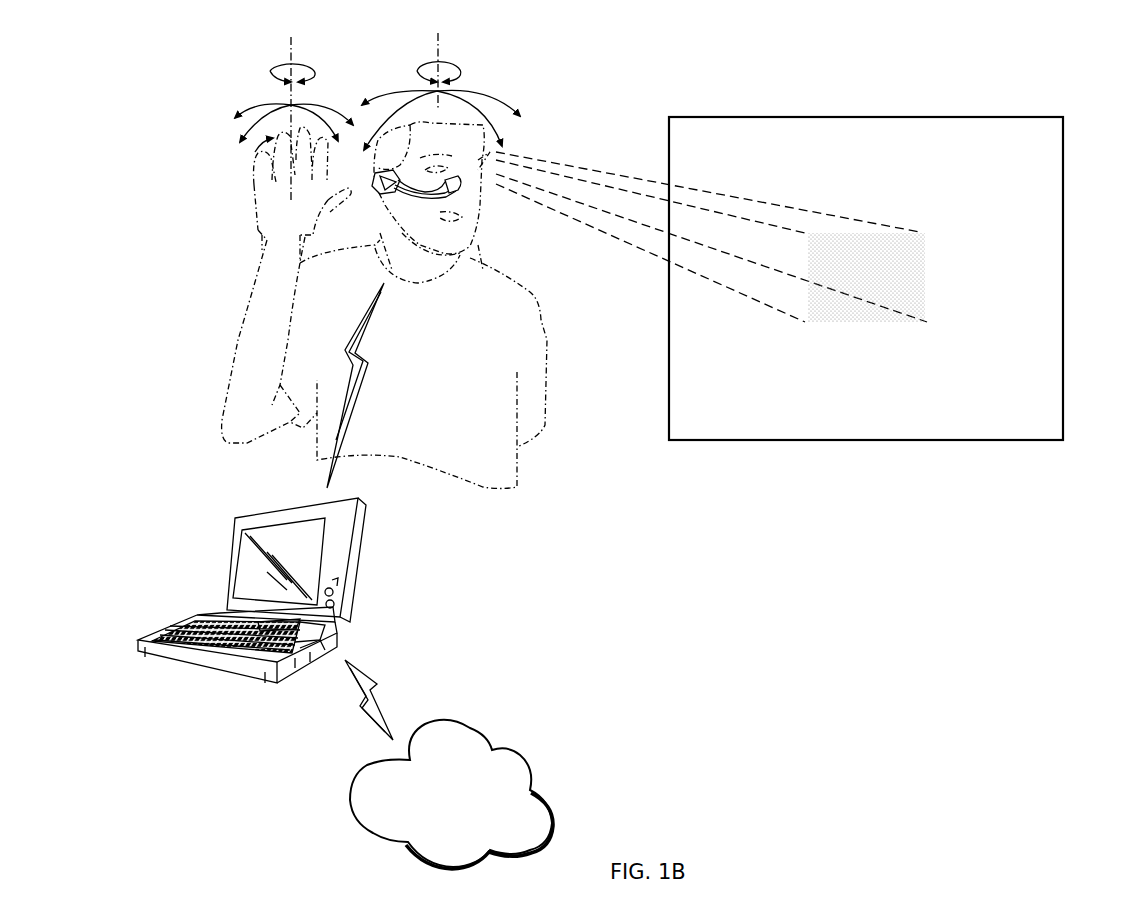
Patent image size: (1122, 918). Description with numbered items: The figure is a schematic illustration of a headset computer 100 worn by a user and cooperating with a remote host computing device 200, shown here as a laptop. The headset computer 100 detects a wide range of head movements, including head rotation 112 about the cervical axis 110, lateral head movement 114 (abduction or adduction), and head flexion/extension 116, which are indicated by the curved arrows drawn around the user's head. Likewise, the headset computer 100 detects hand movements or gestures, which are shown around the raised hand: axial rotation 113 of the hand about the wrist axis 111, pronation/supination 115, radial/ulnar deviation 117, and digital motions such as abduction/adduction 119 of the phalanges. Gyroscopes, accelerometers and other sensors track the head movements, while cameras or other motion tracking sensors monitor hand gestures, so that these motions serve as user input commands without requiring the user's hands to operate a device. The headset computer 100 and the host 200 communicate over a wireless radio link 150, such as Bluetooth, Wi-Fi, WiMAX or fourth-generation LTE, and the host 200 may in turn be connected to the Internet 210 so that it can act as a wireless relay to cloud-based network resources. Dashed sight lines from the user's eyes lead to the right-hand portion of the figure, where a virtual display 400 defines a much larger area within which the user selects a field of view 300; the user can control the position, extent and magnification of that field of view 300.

The headset computer 100 is at (386, 208).
The cervical axis 110 is at (440, 42).
The wrist axis 111 is at (289, 44).
The head rotation 112 is at (461, 71).
The axial rotation of the hand 113 is at (268, 72).
The lateral head movement 114 is at (492, 98).
The pronation/supination 115 is at (315, 105).
The head flexion/extension 116 is at (497, 122).
The radial/ulnar deviation 117 is at (252, 128).
The abduction/adduction of the phalanges 119 is at (258, 150).
The wireless radio link 150 is at (347, 412).
The host computing device 200 is at (352, 557).
The Internet 210 is at (532, 775).
The field of view 300 is at (927, 276).
The virtual display 400 is at (758, 441).